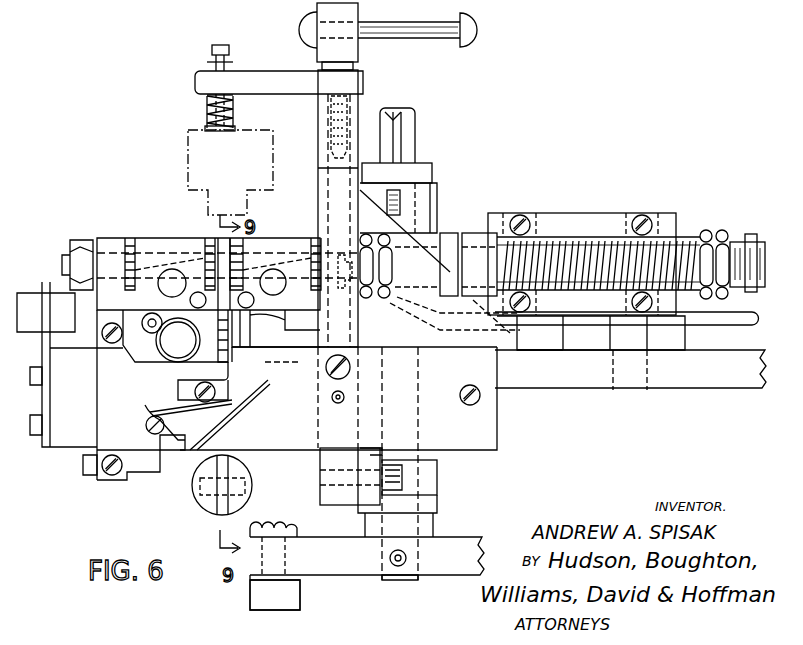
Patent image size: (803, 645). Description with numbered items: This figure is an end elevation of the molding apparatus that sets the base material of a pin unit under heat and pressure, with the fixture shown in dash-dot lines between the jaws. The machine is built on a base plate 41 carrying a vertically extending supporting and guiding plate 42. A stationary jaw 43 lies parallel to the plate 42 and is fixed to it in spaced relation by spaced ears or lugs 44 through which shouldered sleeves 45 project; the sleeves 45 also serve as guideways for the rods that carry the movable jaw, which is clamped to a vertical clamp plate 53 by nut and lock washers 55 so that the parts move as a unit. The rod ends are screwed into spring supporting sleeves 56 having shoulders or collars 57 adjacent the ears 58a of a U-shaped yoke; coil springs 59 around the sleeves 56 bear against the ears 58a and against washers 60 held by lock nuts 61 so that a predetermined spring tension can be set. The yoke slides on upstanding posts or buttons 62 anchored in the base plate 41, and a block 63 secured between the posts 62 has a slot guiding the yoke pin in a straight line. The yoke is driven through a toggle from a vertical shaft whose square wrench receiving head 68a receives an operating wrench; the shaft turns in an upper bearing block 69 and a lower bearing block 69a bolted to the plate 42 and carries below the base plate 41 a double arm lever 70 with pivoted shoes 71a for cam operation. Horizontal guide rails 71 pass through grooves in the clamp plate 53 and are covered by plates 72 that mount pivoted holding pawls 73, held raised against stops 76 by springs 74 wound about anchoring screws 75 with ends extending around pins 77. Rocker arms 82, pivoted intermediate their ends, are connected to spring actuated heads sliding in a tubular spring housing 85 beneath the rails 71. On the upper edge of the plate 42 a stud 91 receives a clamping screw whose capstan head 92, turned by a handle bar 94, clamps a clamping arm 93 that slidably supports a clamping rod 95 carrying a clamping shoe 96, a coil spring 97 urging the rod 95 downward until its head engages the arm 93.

The base plate 41 is at (685, 388).
The supporting and guiding plate 42 is at (318, 190).
The stationary jaw 43 is at (280, 240).
The ears or lugs 44 is at (318, 396).
The sleeves 45 is at (273, 282).
The clamp plate 53 is at (112, 240).
The nut and lock washers 55 is at (76, 246).
The spring supporting sleeves 56 is at (742, 240).
The shoulders or collars 57 is at (450, 233).
The ears 58a is at (478, 233).
The coil springs 59 is at (590, 237).
The washers 60 is at (705, 232).
The lock nuts 61 is at (722, 232).
The posts or buttons 62 is at (645, 352).
The block 63 is at (563, 347).
The wrench receiving head 68a is at (405, 136).
The upper bearing support or block 69 is at (432, 178).
The lower bearing support or block 69a is at (437, 478).
The double arm lever 70 is at (430, 578).
The guide rails 71 is at (75, 440).
The pivoted shoes 71a is at (290, 598).
The plates 72 is at (146, 407).
The holding pawls 73 is at (270, 362).
The springs 74 is at (215, 420).
The anchoring screws 75 is at (147, 425).
The stops 76 is at (178, 400).
The pins 77 is at (172, 455).
The rocker arms 82 is at (240, 458).
The tubular spring housing 85 is at (250, 488).
The stud 91 is at (352, 113).
The capstan head 92 is at (358, 50).
The clamping arm 93 is at (278, 90).
The handle or capstan bar 94 is at (405, 24).
The clamping rod 95 is at (240, 72).
The clamping shoe or foot 96 is at (236, 130).
The coil spring 97 is at (207, 110).